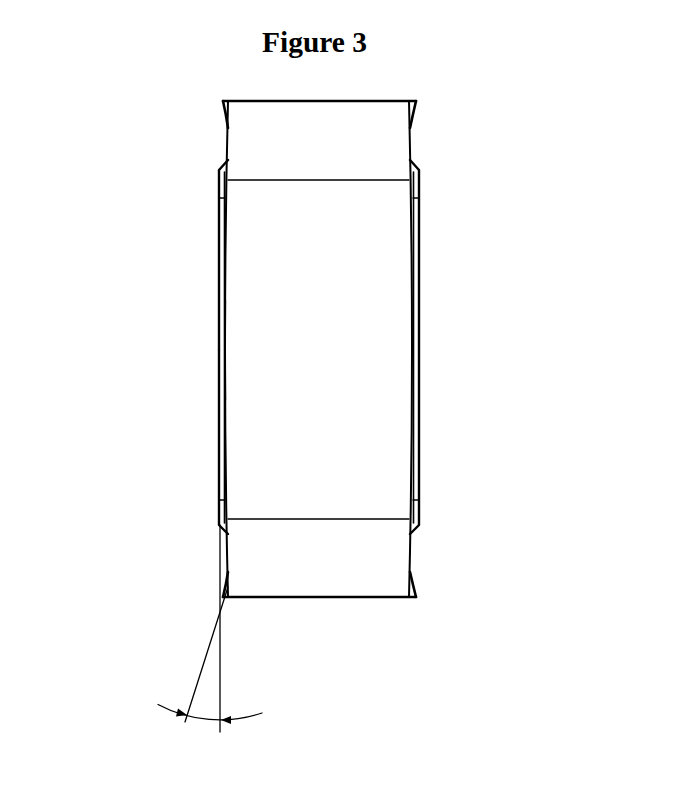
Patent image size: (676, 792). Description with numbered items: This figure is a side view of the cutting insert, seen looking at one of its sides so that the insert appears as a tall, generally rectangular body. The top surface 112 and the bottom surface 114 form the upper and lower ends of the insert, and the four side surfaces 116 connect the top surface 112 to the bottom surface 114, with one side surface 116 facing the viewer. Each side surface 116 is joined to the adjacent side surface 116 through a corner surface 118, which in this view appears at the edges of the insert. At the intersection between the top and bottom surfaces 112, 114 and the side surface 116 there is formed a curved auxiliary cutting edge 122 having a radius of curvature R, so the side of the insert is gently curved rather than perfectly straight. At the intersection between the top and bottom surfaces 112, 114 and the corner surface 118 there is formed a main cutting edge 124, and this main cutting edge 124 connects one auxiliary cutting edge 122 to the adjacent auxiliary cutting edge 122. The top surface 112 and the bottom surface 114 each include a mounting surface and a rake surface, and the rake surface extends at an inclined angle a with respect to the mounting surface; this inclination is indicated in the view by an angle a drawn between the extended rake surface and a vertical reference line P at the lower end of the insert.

The top surface 112 is at (210, 395).
The bottom surface 114 is at (433, 447).
The side surface 116 is at (388, 359).
The corner surface 118 is at (366, 582).
The auxiliary cutting edge 122 is at (214, 273).
The main cutting edge 124 is at (215, 584).
The radius of curvature R is at (243, 340).
The vertical reference plane P is at (221, 676).
The inclined angle a is at (210, 669).